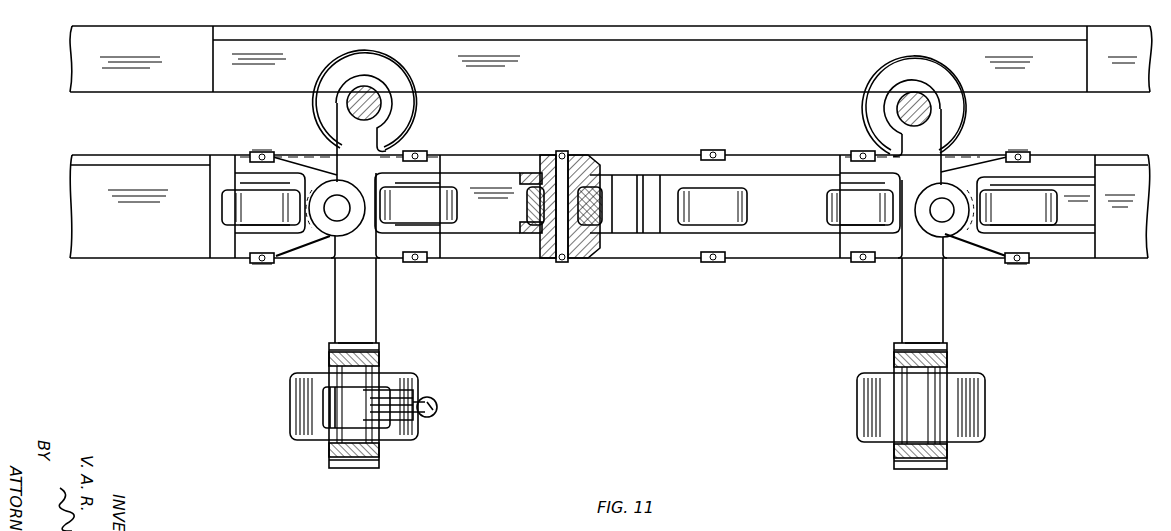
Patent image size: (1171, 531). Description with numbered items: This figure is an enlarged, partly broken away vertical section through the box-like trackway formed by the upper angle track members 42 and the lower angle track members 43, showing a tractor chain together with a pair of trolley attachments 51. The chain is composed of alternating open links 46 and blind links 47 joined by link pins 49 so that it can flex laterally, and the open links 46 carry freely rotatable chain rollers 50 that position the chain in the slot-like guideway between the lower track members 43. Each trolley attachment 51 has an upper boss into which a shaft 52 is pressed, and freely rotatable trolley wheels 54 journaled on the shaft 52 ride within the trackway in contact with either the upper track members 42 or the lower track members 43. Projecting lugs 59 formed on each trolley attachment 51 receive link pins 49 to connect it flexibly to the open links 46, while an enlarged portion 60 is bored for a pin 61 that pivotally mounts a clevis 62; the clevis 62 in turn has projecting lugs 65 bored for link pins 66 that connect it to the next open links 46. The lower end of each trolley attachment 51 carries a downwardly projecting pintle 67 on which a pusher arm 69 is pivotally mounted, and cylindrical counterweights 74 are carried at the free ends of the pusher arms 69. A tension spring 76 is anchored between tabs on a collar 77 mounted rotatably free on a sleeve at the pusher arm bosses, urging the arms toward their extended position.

The upper angle track member 42 is at (626, 26).
The lower angle track member 43 is at (1122, 158).
The open link 46 is at (222, 232).
The blind link 47 is at (653, 237).
The link pin 49 is at (413, 152).
The chain roller 50 is at (527, 208).
The trolley attachment 51 is at (382, 306).
The shaft 52 is at (370, 92).
The trolley wheel 54 is at (398, 70).
The projecting lug 59 is at (438, 155).
The enlarged portion 60 is at (333, 248).
The pin 61 is at (337, 216).
The clevis 62 is at (322, 159).
The projecting lug 65 is at (250, 156).
The link pin 66 is at (262, 262).
The pintle 67 is at (337, 332).
The pusher arm 69 is at (380, 360).
The cylindrical counterweight 74 is at (291, 401).
The tension spring 76 is at (437, 403).
The collar 77 is at (334, 425).